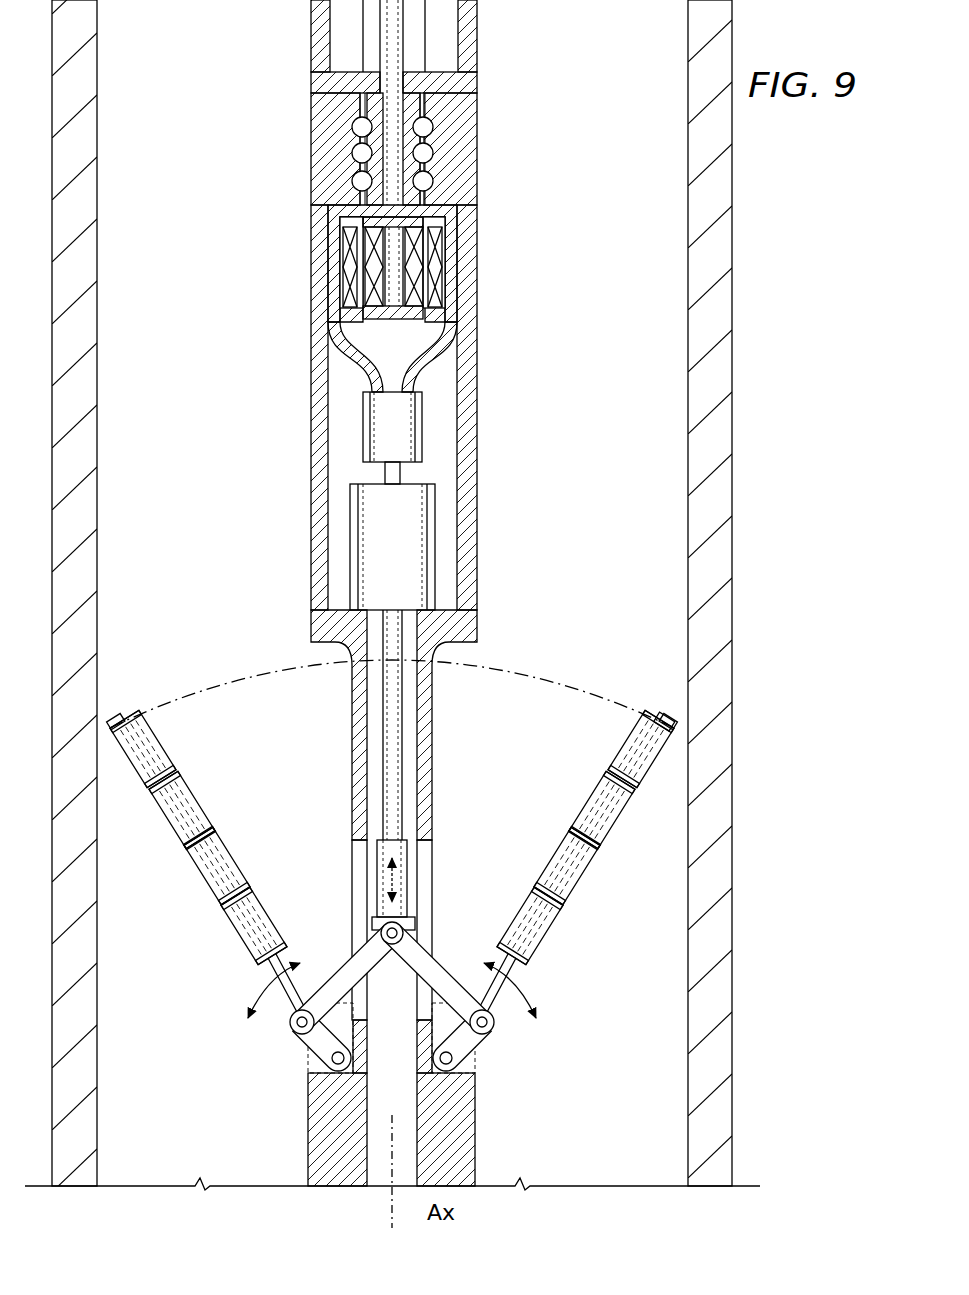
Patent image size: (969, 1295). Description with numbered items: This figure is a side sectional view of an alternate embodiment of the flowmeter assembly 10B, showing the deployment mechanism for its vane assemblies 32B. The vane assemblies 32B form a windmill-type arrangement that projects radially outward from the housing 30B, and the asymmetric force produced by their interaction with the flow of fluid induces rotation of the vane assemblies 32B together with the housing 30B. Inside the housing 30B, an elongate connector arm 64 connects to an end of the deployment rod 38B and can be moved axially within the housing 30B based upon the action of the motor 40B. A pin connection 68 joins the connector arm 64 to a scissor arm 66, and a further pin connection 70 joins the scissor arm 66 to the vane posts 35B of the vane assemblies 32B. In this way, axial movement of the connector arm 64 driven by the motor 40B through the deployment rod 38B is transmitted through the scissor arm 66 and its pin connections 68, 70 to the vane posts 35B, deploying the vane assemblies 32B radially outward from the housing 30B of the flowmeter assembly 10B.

The flowmeter assembly 10B is at (222, 578).
The housing 30B is at (475, 200).
The vane assemblies 32B is at (661, 705).
The vane posts 35B is at (593, 867).
The deployment rod 38B is at (400, 478).
The motor 40B is at (425, 543).
The connector arm 64 is at (405, 840).
The scissor arm 66 is at (440, 960).
The pin connection 68 is at (372, 925).
The pin connection 70 is at (487, 1030).